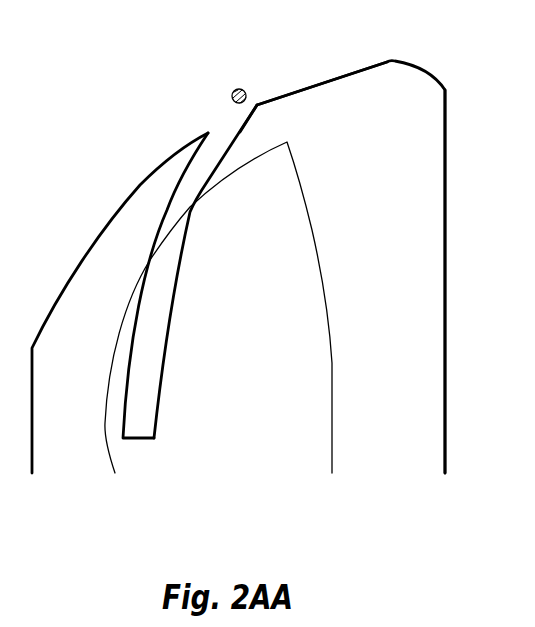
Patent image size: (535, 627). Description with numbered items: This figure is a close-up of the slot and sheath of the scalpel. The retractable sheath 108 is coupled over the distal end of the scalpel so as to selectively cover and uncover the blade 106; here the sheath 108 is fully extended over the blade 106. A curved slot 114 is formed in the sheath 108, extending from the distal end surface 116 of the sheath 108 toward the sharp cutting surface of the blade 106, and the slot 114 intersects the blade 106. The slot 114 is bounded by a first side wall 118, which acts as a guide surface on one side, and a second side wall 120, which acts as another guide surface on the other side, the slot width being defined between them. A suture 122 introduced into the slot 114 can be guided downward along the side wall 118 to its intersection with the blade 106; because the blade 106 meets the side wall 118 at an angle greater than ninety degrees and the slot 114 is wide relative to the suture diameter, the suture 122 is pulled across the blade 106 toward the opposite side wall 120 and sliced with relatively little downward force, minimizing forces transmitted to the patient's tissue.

The blade 106 is at (263, 360).
The retractable sheath 108 is at (433, 128).
The slot 114 is at (203, 173).
The distal end surface 116 is at (356, 66).
The first side wall 118 is at (240, 132).
The second side wall 120 is at (176, 190).
The suture 122 is at (240, 89).